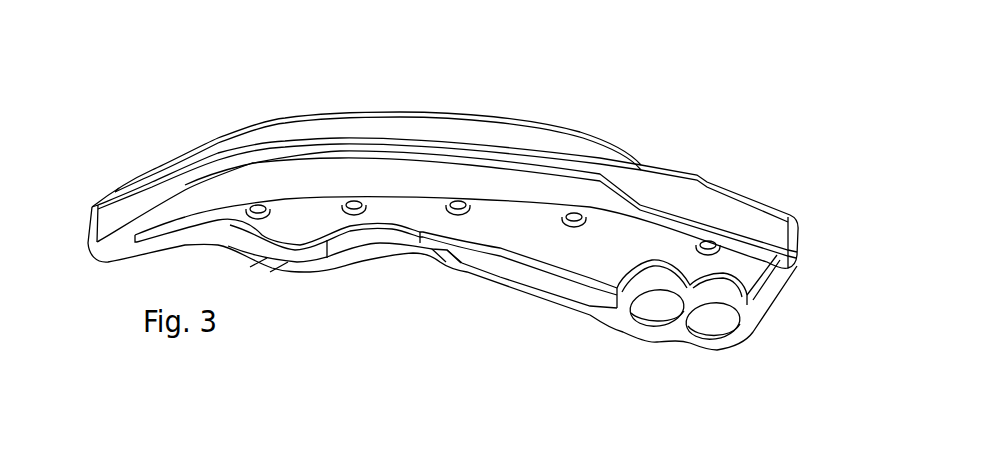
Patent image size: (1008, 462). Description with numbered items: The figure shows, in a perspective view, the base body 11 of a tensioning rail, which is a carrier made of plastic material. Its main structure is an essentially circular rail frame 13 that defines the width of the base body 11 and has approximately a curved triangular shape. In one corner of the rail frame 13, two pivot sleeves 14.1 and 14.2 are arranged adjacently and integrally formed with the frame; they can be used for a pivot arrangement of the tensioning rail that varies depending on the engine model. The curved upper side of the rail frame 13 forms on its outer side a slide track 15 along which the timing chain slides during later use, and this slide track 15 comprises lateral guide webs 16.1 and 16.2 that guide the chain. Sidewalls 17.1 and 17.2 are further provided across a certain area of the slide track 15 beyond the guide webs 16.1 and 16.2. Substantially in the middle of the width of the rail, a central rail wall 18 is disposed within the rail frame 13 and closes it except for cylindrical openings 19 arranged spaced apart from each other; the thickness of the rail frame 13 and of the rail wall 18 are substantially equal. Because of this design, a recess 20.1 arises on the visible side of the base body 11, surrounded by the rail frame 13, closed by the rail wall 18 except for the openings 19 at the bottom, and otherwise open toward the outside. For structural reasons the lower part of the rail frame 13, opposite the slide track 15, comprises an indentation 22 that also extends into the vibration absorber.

The base body 11 is at (682, 130).
The rail frame 13 is at (760, 302).
The pivot sleeve 14.1 is at (661, 312).
The pivot sleeve 14.2 is at (713, 328).
The slide track 15 is at (688, 200).
The guide web 16.1 is at (777, 206).
The guide web 16.2 is at (770, 240).
The sidewall 17.1 is at (537, 118).
The sidewall 17.2 is at (563, 150).
The rail wall 18 is at (400, 212).
The cylindrical openings 19 is at (257, 205).
The recess 20.1 is at (517, 228).
The indentation 22 is at (323, 259).